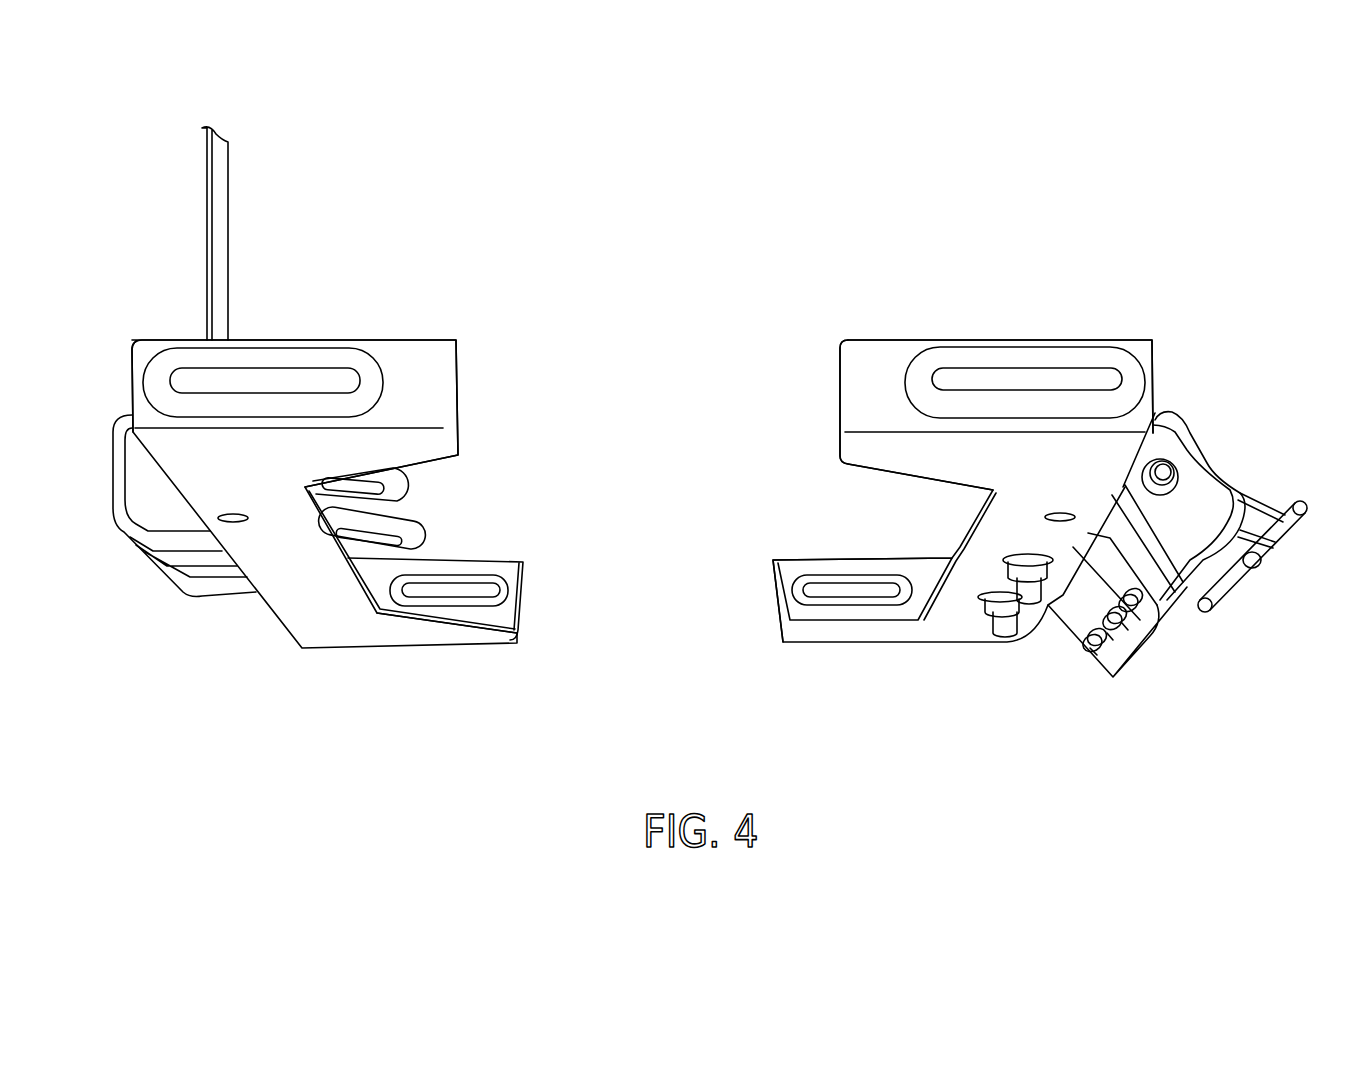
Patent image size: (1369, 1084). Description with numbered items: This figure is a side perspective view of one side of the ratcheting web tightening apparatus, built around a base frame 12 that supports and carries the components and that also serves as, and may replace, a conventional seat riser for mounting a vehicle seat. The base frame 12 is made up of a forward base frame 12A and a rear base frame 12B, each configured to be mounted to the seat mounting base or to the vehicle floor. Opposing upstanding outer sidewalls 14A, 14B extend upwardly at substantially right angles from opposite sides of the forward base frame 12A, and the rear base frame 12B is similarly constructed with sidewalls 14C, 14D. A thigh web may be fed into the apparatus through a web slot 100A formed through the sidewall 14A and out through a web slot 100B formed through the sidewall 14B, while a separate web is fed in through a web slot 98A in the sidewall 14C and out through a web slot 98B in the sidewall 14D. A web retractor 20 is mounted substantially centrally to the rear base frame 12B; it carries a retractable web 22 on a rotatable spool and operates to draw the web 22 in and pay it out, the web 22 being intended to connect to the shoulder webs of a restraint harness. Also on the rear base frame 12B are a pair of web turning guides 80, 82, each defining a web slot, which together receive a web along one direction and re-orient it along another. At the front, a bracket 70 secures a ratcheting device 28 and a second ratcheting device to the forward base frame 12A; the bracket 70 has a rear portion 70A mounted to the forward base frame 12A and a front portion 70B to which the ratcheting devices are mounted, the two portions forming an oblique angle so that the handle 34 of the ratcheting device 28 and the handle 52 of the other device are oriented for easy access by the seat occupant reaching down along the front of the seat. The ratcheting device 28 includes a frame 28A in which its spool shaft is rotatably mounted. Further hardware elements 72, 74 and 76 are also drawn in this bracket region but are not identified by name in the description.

The base frame 12 is at (723, 446).
The forward base frame 12A is at (1027, 509).
The rear base frame 12B is at (350, 403).
The outer sidewall 14A is at (996, 394).
The outer sidewall 14B is at (829, 575).
The sidewall 14C is at (295, 392).
The sidewall 14D is at (474, 574).
The web retractor 20 is at (128, 535).
The retractable web 22 is at (228, 197).
The ratcheting device 28 is at (1209, 480).
The frame of the ratcheting device 28A is at (1205, 493).
The handle 34 is at (1293, 533).
The handle 52 is at (1262, 586).
The bracket 70 is at (1100, 607).
The rear portion of the bracket 70A is at (1078, 562).
The front portion of the bracket 70B is at (1140, 647).
The bolts 72 is at (1000, 617).
The nuts 74 is at (1137, 610).
The washers 76 is at (1122, 623).
The web turning guide 80 is at (409, 490).
The web turning guide 82 is at (429, 541).
The web slot 98A is at (270, 372).
The web slot 98B is at (474, 587).
The web slot 100A is at (1002, 375).
The web slot 100B is at (825, 587).